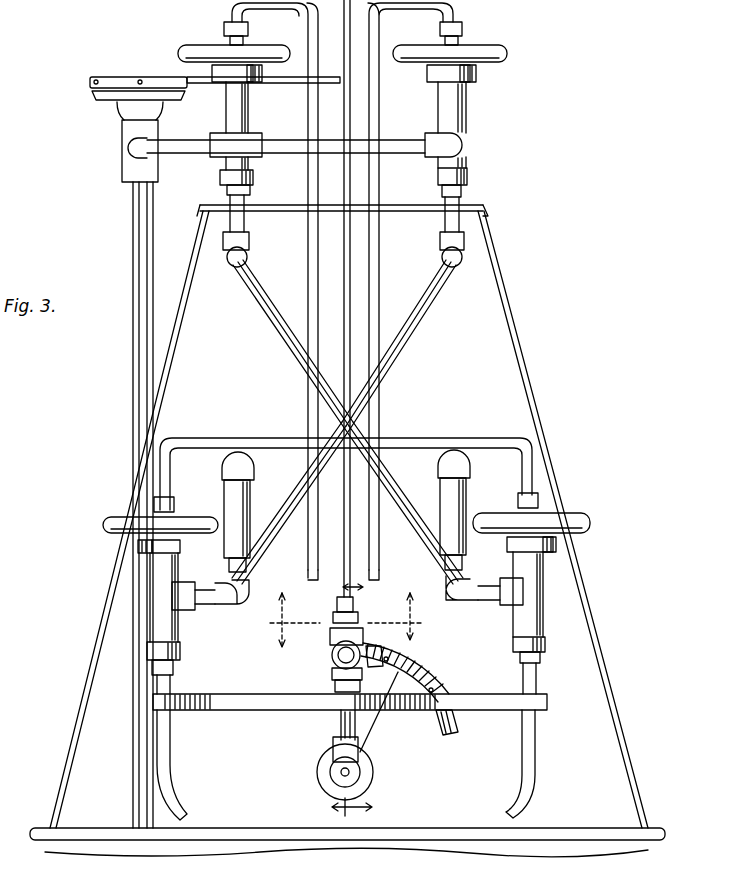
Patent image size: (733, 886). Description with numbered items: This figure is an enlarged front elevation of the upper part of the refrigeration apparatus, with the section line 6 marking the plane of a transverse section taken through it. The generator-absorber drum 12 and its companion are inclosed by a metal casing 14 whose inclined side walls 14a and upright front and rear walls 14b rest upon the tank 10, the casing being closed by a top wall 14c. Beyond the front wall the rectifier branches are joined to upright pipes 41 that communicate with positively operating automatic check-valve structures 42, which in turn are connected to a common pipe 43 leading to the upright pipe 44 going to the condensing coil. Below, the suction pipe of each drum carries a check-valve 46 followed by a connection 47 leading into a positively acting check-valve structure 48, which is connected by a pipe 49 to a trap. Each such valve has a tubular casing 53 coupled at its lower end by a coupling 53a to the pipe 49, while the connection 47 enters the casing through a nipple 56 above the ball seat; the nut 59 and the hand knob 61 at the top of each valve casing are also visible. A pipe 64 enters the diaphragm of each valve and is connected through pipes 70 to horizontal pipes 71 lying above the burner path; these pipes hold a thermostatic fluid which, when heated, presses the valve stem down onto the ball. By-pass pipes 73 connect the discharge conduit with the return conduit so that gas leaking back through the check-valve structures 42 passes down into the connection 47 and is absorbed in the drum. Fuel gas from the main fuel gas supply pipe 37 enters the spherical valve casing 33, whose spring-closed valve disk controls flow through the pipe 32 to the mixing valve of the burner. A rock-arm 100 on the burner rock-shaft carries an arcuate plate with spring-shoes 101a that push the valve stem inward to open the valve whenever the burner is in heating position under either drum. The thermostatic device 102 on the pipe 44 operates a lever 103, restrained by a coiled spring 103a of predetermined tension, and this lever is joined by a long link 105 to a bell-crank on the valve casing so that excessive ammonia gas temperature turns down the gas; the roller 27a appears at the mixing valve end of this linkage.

The tank 10 is at (49, 858).
The generator-absorber drum 12 is at (339, 699).
The casing 14 is at (201, 200).
The inclined side wall 14a is at (190, 263).
The front and rear wall 14b is at (212, 347).
The top wall 14c is at (400, 205).
The roller 27a is at (317, 781).
The pipe 32 is at (342, 724).
The valve casing 33 is at (327, 660).
The main fuel gas supply pipe 37 is at (355, 603).
The upright pipe 41 is at (247, 208).
The check-valve structure 42 is at (215, 114).
The common pipe 43 is at (400, 141).
The upright pipe 44 is at (132, 210).
The check-valve 46 is at (214, 510).
The connection 47 is at (211, 607).
The check-valve structure 48 is at (183, 636).
The pipe 49 is at (170, 752).
The tubular casing 53 is at (248, 117).
The coupling 53a is at (261, 181).
The nipple 56 is at (190, 584).
The nut 59 is at (251, 81).
The hand wheel knob 61 is at (192, 47).
The pipe 64 is at (281, 3).
The pipe 70 is at (308, 290).
The horizontal pipe 71 is at (308, 580).
The by-pass pipe 73 is at (288, 502).
The rock-arm 100 is at (397, 687).
The spring-shoe 101a is at (468, 722).
The thermostatic device 102 is at (114, 114).
The lever 103 is at (173, 77).
The coiled spring 103a is at (200, 103).
The link 105 is at (343, 231).
The section line 6 is at (347, 620).